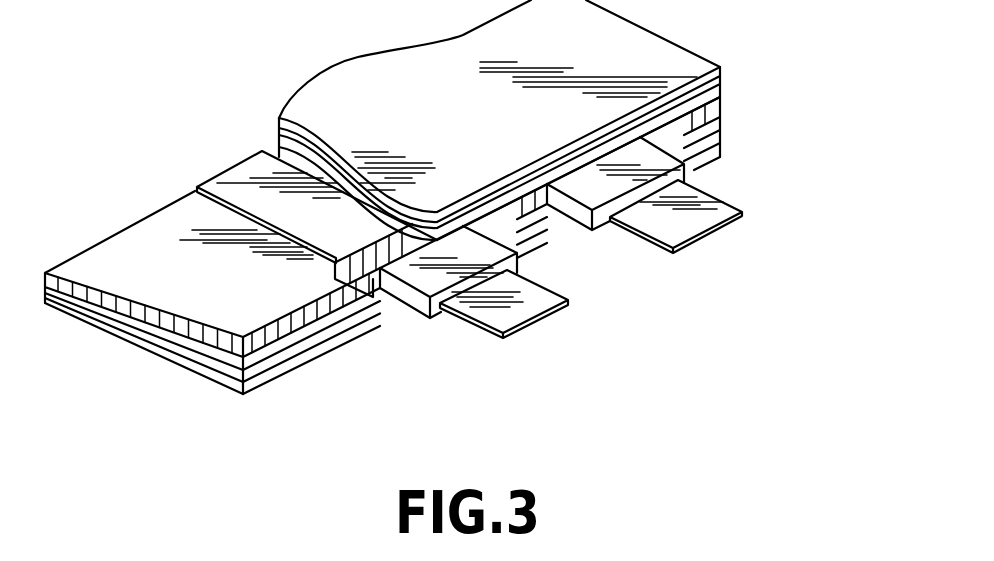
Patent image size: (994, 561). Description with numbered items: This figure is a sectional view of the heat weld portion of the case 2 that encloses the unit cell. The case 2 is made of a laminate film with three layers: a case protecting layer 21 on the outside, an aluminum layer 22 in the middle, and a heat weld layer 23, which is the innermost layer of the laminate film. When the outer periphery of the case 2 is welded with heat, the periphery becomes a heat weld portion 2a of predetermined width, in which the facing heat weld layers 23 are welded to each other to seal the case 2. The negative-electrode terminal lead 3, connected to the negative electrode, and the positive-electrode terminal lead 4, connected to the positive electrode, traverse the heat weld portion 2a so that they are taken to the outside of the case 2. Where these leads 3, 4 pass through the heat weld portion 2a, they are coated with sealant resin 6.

The case 2 is at (820, 20).
The heat weld portion 2a is at (153, 312).
The case protecting layer 21 is at (330, 345).
The aluminum layer 22 is at (289, 359).
The heat weld layer 23 is at (262, 366).
The negative-electrode terminal lead 3 is at (542, 307).
The positive-electrode terminal lead 4 is at (700, 224).
The sealant resin 6 is at (425, 287).